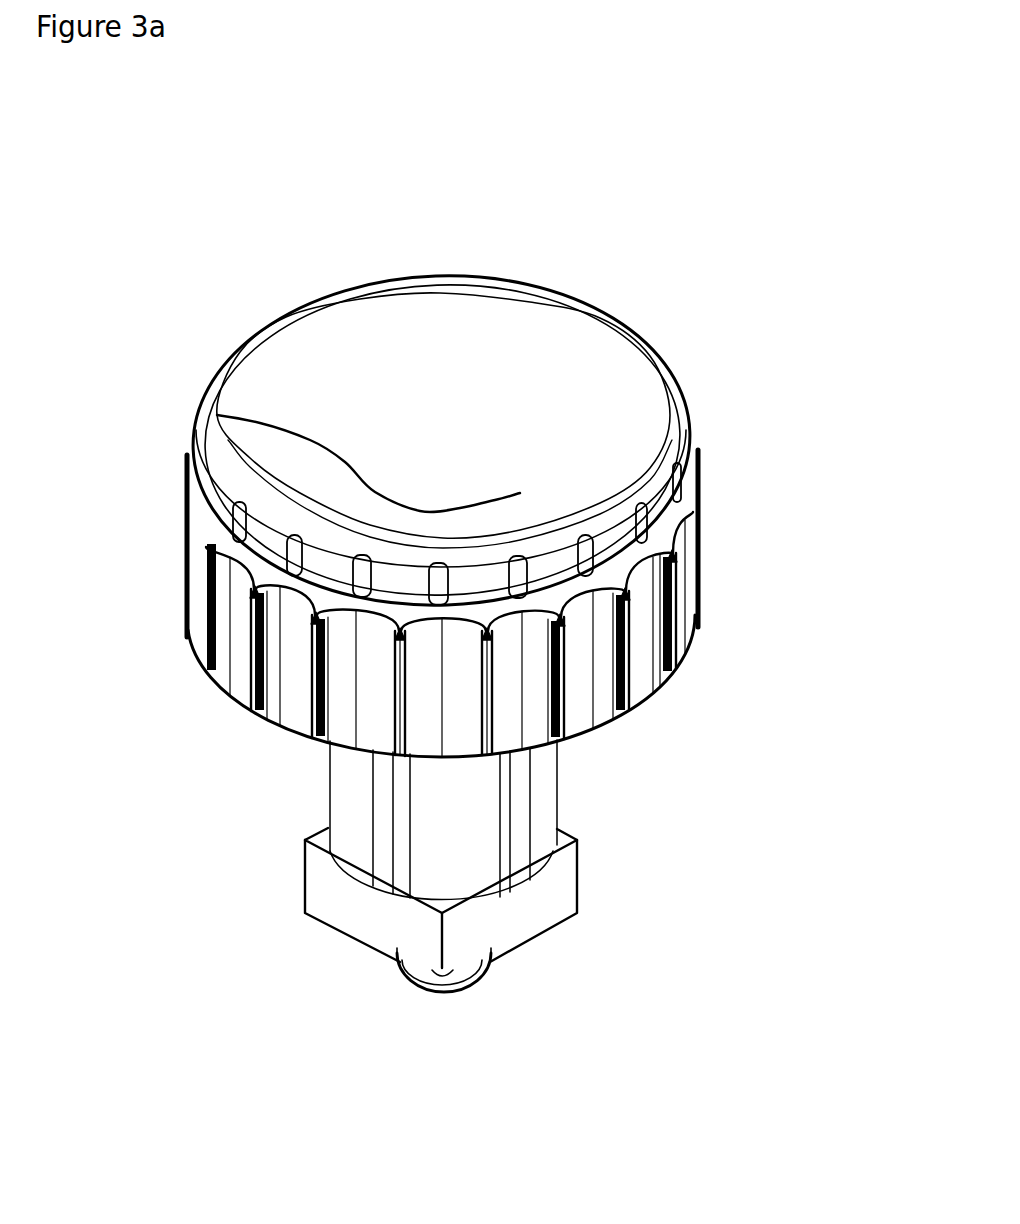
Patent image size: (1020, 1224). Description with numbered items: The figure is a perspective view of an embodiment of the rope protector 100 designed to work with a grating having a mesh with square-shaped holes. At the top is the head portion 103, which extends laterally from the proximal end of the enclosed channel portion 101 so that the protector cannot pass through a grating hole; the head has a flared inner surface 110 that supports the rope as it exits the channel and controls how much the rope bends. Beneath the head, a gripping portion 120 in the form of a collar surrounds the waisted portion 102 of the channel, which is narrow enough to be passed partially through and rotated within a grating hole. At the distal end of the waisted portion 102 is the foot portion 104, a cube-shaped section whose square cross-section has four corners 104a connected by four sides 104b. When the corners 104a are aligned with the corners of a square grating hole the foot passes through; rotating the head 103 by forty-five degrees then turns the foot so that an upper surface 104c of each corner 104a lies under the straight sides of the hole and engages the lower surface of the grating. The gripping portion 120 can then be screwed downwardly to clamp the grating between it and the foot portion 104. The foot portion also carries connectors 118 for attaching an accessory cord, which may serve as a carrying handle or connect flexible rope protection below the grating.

The rope protector 100 is at (478, 185).
The enclosed channel portion 101 is at (460, 507).
The flared inner surface 110 is at (567, 442).
The head portion 103 is at (537, 563).
The gripping portion 120 is at (570, 645).
The waisted portion 102 is at (493, 802).
The foot portion 104 is at (523, 944).
The corners 104a is at (578, 864).
The sides 104b is at (578, 908).
The upper surface 104c is at (578, 838).
The connectors 118 is at (497, 982).